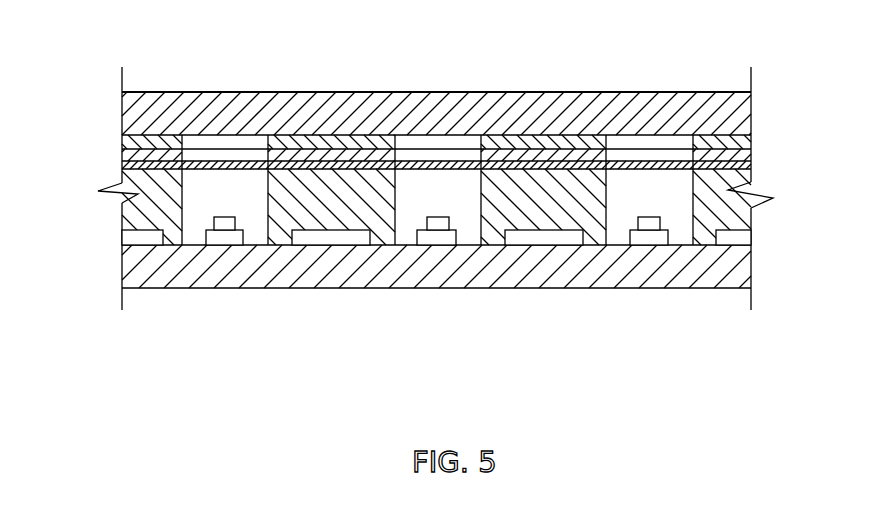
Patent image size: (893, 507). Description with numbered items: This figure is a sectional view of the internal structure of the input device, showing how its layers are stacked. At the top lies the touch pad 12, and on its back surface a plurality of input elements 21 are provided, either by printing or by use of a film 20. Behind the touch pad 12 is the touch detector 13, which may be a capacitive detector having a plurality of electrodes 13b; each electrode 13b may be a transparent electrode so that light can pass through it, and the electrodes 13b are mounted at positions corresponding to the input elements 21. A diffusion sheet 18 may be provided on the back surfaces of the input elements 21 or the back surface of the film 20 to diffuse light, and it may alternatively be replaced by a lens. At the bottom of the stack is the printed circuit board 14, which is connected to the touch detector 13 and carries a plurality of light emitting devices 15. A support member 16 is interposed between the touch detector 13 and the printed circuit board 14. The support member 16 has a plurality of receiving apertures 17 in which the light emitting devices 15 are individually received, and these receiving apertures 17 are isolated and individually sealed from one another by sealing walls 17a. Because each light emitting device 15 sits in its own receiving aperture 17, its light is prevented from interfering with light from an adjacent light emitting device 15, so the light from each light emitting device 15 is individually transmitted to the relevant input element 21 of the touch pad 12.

The touch pad 12 is at (750, 113).
The touch detector 13 is at (750, 155).
The electrode 13b is at (200, 155).
The printed circuit board 14 is at (743, 268).
The light emitting device 15 is at (218, 222).
The support member 16 is at (130, 183).
The receiving aperture 17 is at (262, 203).
The sealing wall 17a is at (268, 178).
The diffusion sheet 18 is at (750, 167).
The film 20 is at (130, 142).
The input element 21 is at (227, 143).